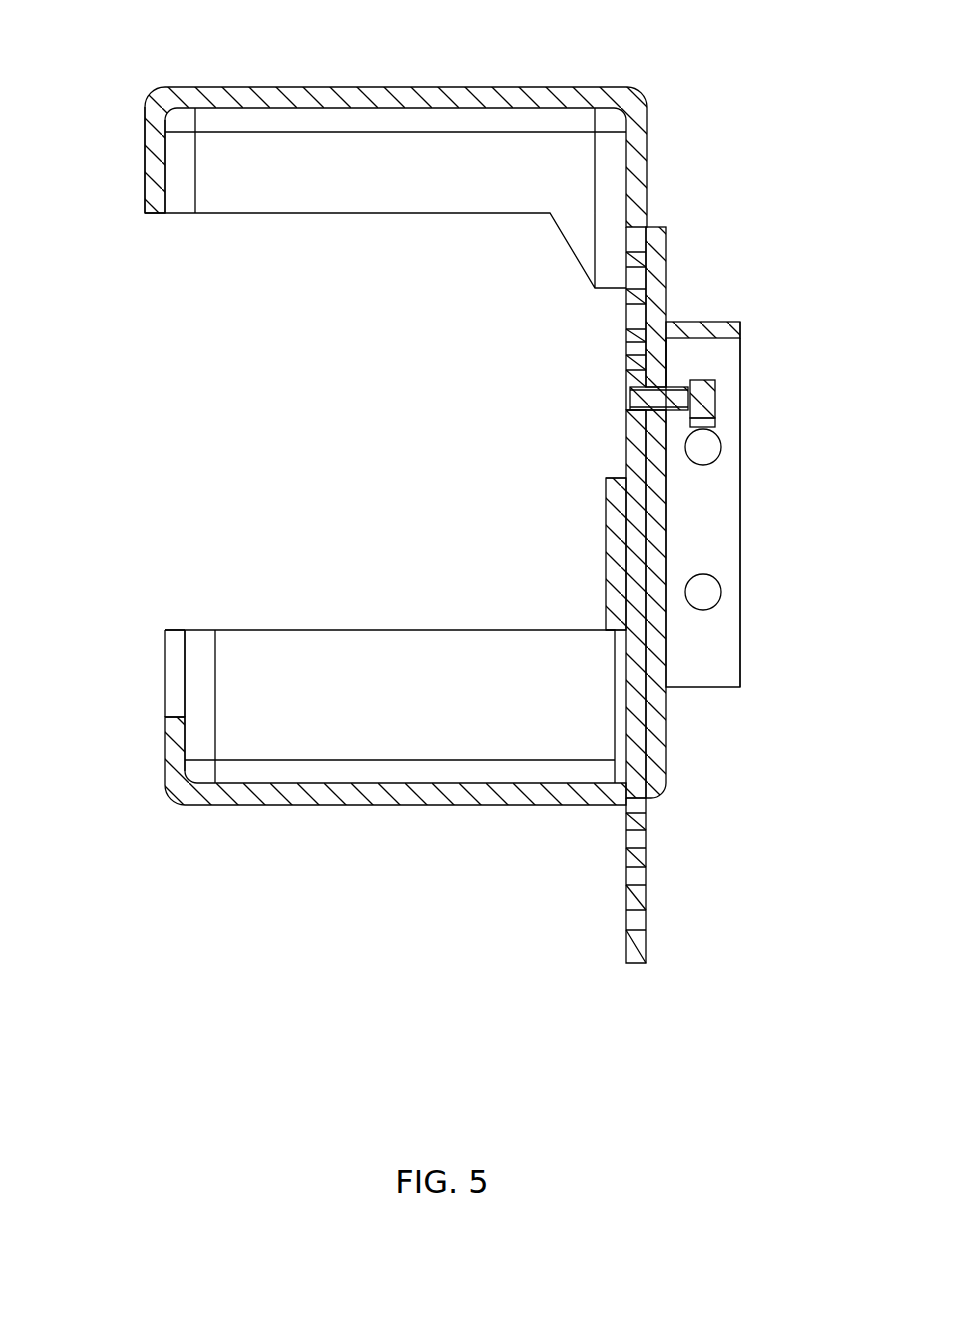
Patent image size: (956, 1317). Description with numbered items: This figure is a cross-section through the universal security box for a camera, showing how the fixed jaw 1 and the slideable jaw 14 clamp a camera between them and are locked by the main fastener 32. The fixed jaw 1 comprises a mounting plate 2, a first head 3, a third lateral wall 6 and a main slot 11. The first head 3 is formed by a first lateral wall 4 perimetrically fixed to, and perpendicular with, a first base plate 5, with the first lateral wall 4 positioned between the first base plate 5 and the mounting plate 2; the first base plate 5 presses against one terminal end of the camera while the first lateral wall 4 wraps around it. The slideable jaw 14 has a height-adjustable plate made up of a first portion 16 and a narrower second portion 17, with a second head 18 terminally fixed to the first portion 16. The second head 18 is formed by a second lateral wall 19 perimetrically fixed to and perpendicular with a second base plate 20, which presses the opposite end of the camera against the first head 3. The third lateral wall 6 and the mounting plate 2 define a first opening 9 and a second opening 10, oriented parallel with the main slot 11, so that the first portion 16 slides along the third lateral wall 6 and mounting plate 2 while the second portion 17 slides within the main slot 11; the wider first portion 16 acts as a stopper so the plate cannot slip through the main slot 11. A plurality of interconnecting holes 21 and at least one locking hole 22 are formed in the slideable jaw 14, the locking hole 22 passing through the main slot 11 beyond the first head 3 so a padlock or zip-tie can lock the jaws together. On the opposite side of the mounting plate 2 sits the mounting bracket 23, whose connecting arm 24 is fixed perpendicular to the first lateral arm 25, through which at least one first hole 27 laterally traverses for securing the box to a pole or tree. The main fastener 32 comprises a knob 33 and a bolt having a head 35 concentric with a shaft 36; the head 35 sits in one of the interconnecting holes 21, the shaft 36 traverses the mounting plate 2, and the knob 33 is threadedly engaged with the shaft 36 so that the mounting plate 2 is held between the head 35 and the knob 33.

The fixed jaw 1 is at (150, 724).
The mounting plate 2 is at (668, 705).
The first head 3 is at (166, 648).
The first lateral wall 4 is at (182, 630).
The first base plate 5 is at (355, 806).
The third lateral wall 6 is at (604, 553).
The first opening 9 is at (626, 476).
The second opening 10 is at (624, 634).
The main slot 11 is at (622, 808).
The slideable jaw 14 is at (112, 168).
The first portion 16 is at (641, 471).
The second portion 17 is at (648, 818).
The second head 18 is at (145, 168).
The second lateral wall 19 is at (160, 215).
The second base plate 20 is at (318, 95).
The plurality of interconnecting holes 21 is at (626, 327).
The at least one locking hole 22 is at (645, 860).
The mounting bracket 23 is at (748, 340).
The connecting arm 24 is at (658, 324).
The first lateral arm 25 is at (740, 557).
The at least one first hole 27 is at (717, 445).
The main fastener 32 is at (568, 397).
The knob 33 is at (718, 405).
The head 35 is at (627, 378).
The shaft 36 is at (716, 338).